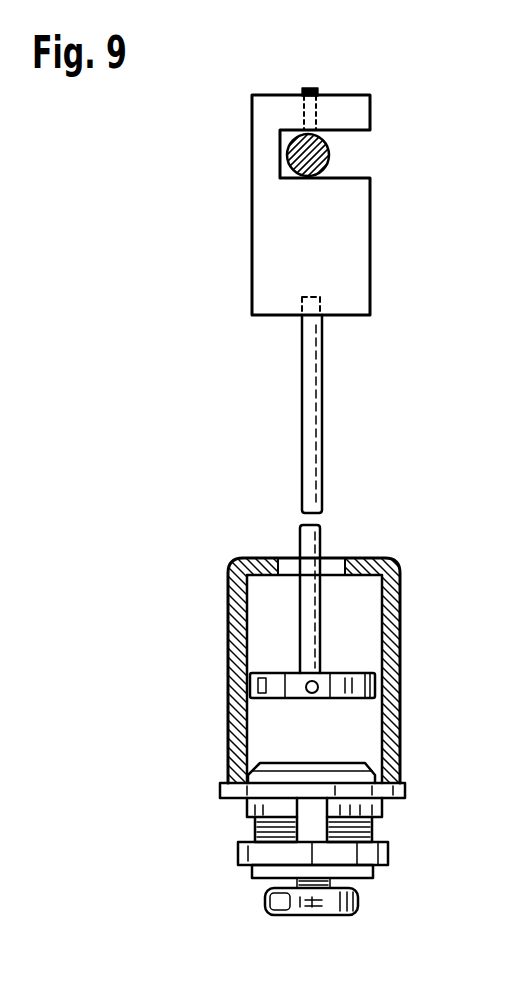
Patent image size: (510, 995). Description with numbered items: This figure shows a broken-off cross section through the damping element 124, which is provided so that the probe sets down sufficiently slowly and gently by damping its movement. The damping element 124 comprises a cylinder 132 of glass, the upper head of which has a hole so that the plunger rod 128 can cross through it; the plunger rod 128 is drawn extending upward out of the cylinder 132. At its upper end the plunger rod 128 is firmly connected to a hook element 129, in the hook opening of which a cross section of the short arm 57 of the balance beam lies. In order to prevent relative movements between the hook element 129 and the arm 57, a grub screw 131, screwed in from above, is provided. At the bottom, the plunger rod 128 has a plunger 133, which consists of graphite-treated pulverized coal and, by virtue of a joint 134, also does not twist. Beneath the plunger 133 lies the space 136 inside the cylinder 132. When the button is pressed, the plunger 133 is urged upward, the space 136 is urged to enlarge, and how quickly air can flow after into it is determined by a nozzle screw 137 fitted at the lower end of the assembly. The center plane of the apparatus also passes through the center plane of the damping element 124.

The damping element 124 is at (132, 319).
The hook element 129 is at (357, 241).
The grub screw 131 is at (318, 93).
The short arm 57 is at (331, 152).
The plunger rod 128 is at (310, 441).
The cylinder 132 is at (392, 628).
The plunger 133 is at (252, 683).
The joint 134 is at (315, 693).
The space 136 is at (268, 747).
The nozzle screw 137 is at (325, 905).